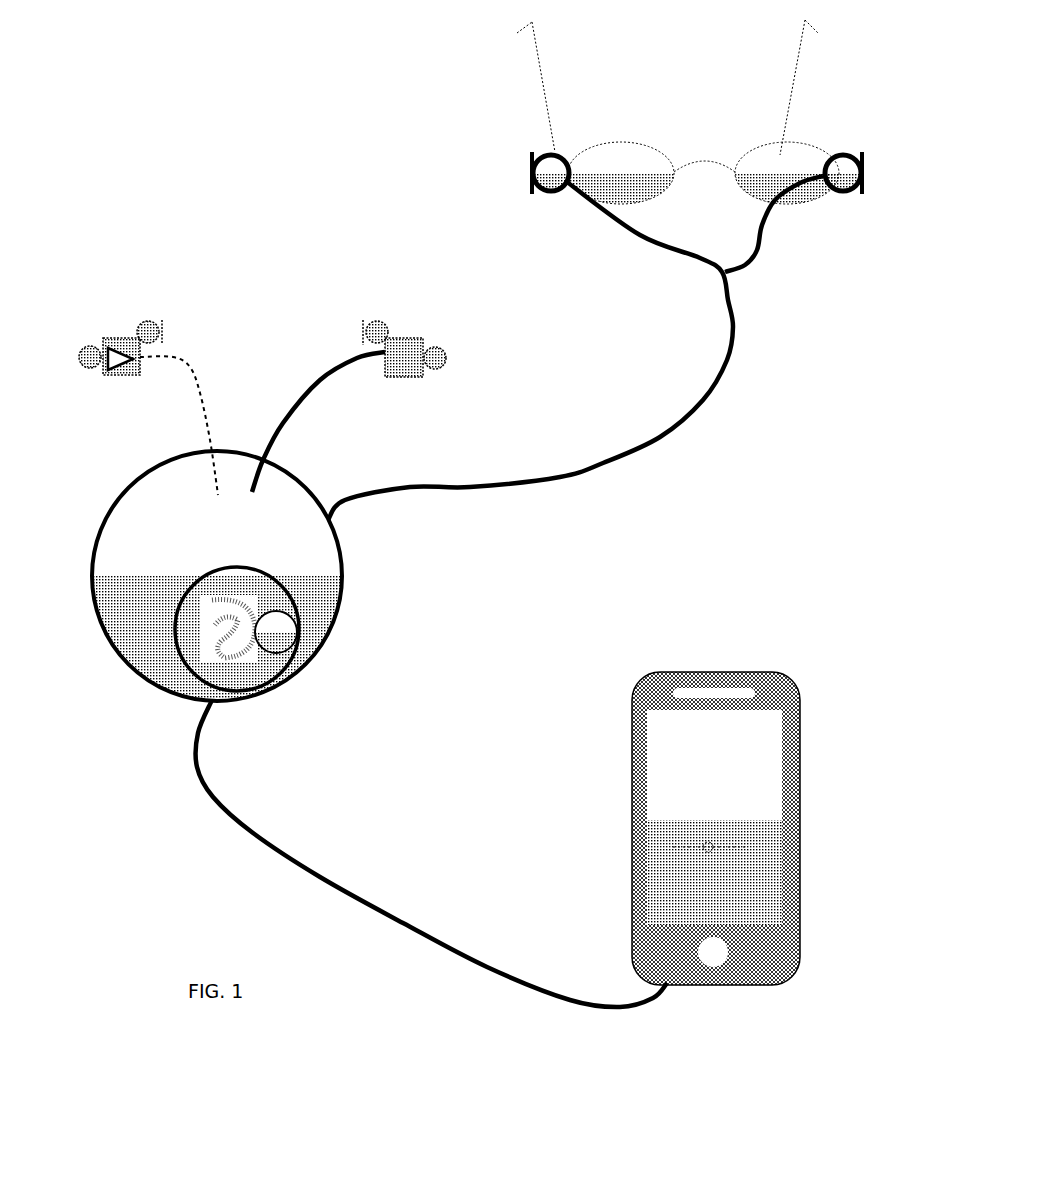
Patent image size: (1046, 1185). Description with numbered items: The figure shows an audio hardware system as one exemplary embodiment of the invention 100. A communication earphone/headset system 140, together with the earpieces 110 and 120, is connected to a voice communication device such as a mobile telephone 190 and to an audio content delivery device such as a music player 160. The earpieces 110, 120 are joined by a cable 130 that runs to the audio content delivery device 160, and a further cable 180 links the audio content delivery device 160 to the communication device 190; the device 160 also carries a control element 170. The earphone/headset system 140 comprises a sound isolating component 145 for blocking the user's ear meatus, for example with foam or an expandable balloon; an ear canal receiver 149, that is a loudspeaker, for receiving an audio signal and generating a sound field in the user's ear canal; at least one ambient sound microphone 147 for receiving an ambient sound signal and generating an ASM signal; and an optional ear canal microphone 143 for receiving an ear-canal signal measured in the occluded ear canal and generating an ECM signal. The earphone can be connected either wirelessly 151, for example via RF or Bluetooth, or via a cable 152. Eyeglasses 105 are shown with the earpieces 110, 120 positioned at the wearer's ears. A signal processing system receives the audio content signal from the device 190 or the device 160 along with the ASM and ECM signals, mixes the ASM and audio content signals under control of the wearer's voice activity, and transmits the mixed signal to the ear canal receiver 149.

The exemplary embodiment of the present invention 100 is at (322, 203).
The eyeglasses 105 is at (657, 148).
The communication earphone/headset system component 110 is at (526, 165).
The communication earphone/headset system component 120 is at (838, 152).
The earpiece cable 130 is at (573, 470).
The communication earphone/headset system 140 is at (245, 350).
The ear canal microphone 143 is at (80, 350).
The sound isolating component 145 is at (108, 338).
The ambient sound microphone 147 is at (147, 321).
The ear canal receiver 149 is at (120, 362).
The wireless connection 151 is at (193, 425).
The cable 152 is at (318, 422).
The audio content delivery device 160 is at (337, 563).
The control button 170 is at (290, 643).
The cable to phone 180 is at (405, 923).
The communication device / audio content delivery device 190 is at (720, 673).